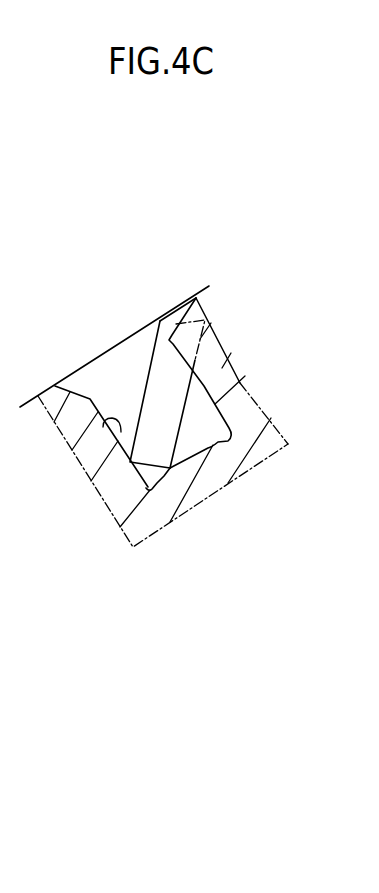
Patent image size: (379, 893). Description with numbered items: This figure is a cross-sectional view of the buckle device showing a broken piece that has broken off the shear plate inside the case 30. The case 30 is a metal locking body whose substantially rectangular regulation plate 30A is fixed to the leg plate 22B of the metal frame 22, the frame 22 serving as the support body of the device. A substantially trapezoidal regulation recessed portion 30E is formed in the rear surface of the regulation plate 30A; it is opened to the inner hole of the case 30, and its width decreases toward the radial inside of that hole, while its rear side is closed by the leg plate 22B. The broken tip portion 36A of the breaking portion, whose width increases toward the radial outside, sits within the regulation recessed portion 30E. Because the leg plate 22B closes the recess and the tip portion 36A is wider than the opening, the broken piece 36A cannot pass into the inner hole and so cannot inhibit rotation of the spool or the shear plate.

The frame 22 is at (163, 465).
The leg plate 22B is at (208, 288).
The case 30 is at (220, 449).
The regulation plate 30A is at (228, 377).
The regulation recessed portion 30E is at (121, 433).
The tip portion 36A is at (148, 378).